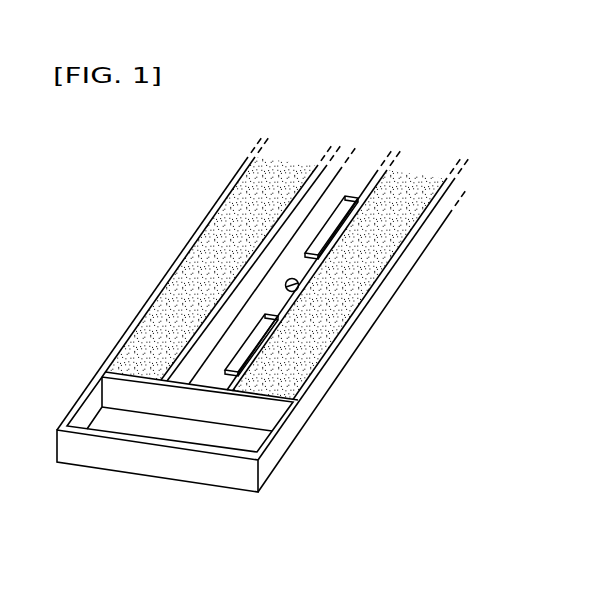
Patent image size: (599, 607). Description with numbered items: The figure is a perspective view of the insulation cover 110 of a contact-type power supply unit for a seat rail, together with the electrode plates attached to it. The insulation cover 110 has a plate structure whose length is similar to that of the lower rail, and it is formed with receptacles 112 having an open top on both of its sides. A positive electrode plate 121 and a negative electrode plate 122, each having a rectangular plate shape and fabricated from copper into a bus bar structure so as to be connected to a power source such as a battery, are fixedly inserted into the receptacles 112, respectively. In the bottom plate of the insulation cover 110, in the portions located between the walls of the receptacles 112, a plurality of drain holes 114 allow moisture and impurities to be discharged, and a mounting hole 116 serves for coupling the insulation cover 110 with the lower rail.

The insulation cover 110 is at (147, 457).
The receptacles 112 is at (190, 372).
The drain holes 114 is at (245, 358).
The mounting hole 116 is at (298, 284).
The positive (+) electrode plate 121 is at (192, 272).
The negative (−) electrode plate 122 is at (365, 265).